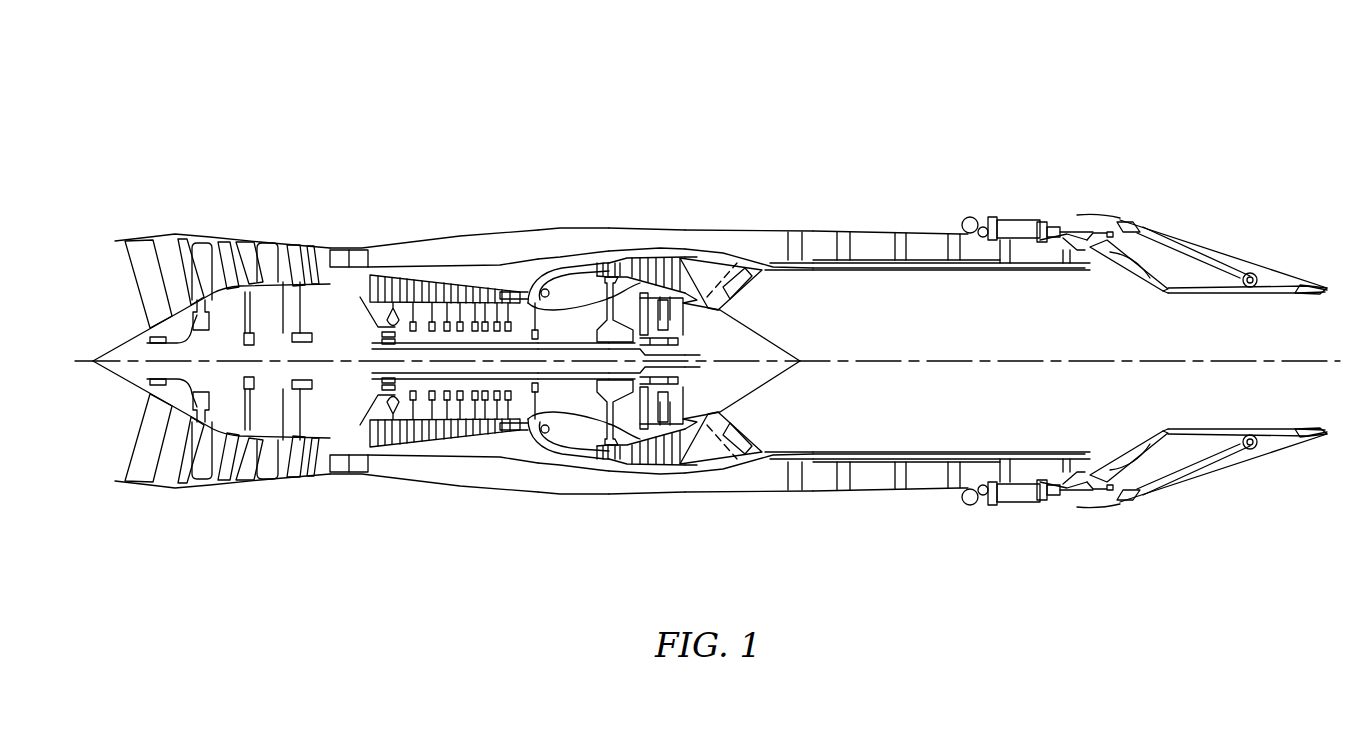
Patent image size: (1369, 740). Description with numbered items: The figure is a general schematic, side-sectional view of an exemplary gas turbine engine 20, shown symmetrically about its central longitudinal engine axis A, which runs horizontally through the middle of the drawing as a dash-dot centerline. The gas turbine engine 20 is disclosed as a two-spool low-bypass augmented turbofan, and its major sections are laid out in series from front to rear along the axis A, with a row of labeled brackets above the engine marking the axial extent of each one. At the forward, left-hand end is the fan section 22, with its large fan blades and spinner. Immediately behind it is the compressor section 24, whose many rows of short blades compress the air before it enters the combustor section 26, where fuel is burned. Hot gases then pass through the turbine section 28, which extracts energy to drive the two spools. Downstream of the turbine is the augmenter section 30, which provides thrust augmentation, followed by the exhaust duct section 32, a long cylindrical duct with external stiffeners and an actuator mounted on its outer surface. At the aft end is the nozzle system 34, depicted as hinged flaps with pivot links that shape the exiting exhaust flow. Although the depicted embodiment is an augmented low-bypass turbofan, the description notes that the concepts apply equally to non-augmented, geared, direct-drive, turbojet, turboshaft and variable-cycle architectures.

The gas turbine engine 20 is at (972, 79).
The fan section 22 is at (332, 170).
The compressor section 24 is at (538, 170).
The combustor section 26 is at (609, 170).
The turbine section 28 is at (685, 170).
The augmenter section 30 is at (813, 170).
The exhaust duct section 32 is at (1085, 170).
The nozzle system 34 is at (1327, 170).
The central longitudinal engine axis A is at (1072, 362).